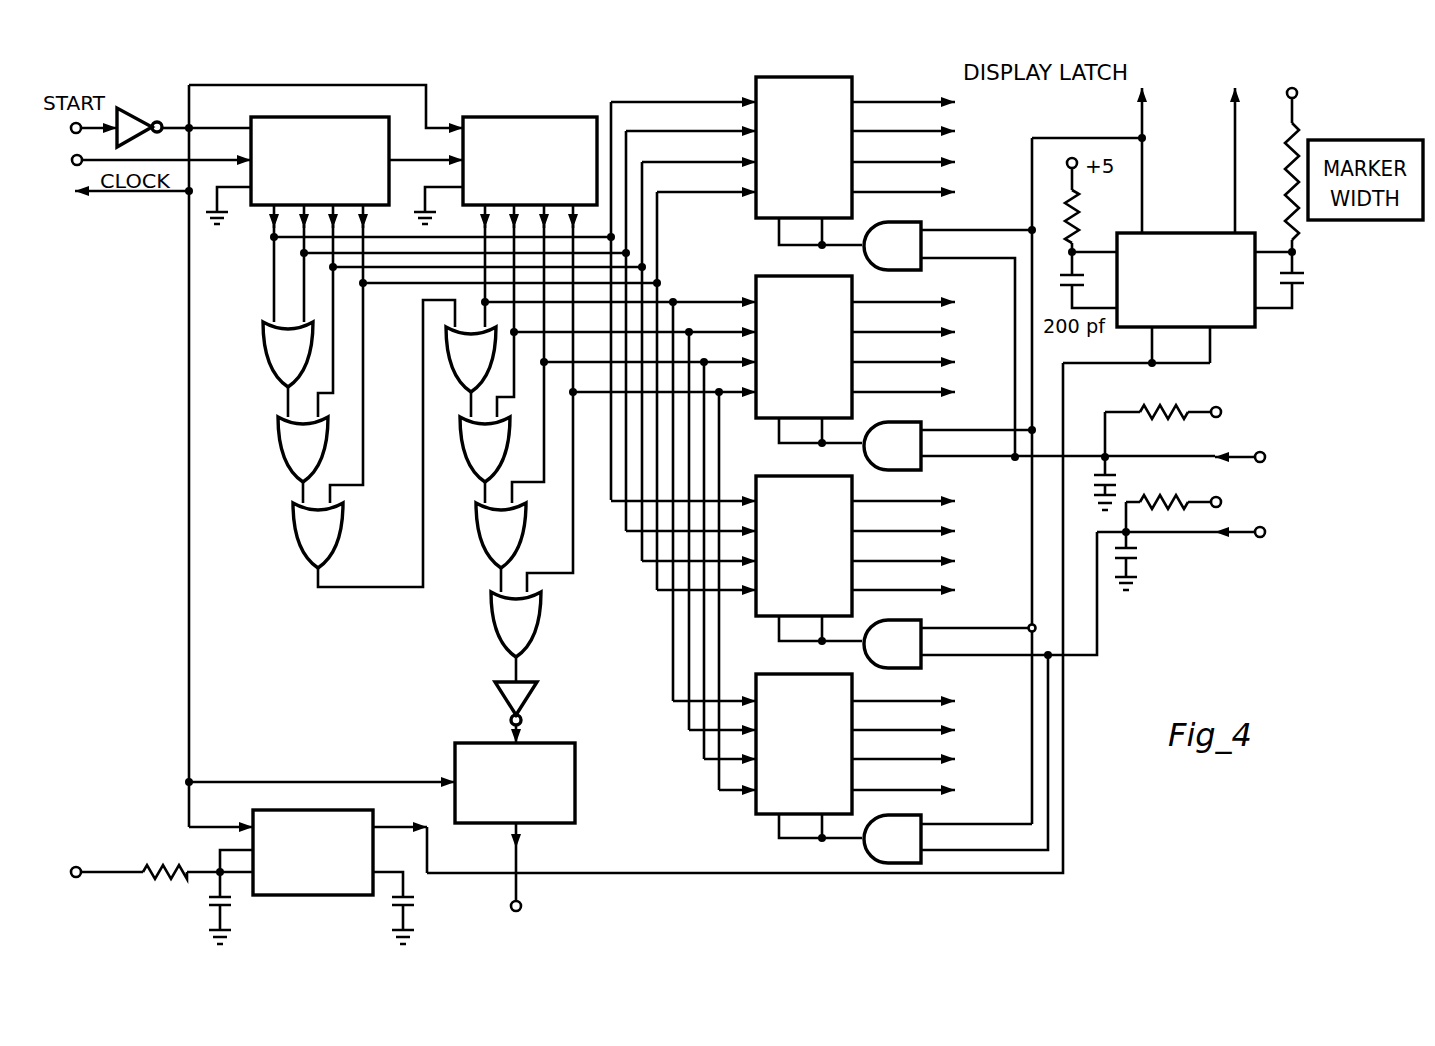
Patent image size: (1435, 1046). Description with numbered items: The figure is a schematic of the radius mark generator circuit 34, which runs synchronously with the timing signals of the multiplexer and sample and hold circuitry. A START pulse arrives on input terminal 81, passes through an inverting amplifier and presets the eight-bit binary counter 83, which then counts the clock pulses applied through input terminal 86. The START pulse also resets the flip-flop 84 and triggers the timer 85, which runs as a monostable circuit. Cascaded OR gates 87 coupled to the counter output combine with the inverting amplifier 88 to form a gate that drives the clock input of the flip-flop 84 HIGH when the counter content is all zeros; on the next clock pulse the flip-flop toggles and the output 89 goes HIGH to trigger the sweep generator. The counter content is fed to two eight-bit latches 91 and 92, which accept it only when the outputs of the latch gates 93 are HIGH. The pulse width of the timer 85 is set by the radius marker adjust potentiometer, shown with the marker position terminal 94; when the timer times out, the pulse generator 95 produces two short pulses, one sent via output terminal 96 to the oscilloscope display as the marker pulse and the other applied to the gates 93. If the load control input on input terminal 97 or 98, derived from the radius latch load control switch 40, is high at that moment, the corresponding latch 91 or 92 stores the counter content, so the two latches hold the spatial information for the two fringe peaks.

The radius mark generator circuit 34 is at (182, 441).
The radius latch load control switch 40 is at (1209, 485).
The input terminal 81 is at (74, 128).
The 8-bit binary counter 83 is at (238, 112).
The flip-flop 84 is at (577, 780).
The timer 85 is at (352, 811).
The input terminal 86 is at (96, 180).
The cascaded OR gates 87 is at (256, 318).
The inverting amplifier 88 is at (506, 712).
The output 89 is at (521, 908).
The 8-bit latch 91 is at (745, 66).
The 8-bit latch 92 is at (745, 464).
The latch gates 93 is at (904, 260).
The marker position input terminal 94 is at (88, 855).
The pulse generator 95 is at (1186, 233).
The output terminal 96 is at (1233, 100).
The input terminal 97 is at (1248, 457).
The input terminal 98 is at (1181, 530).